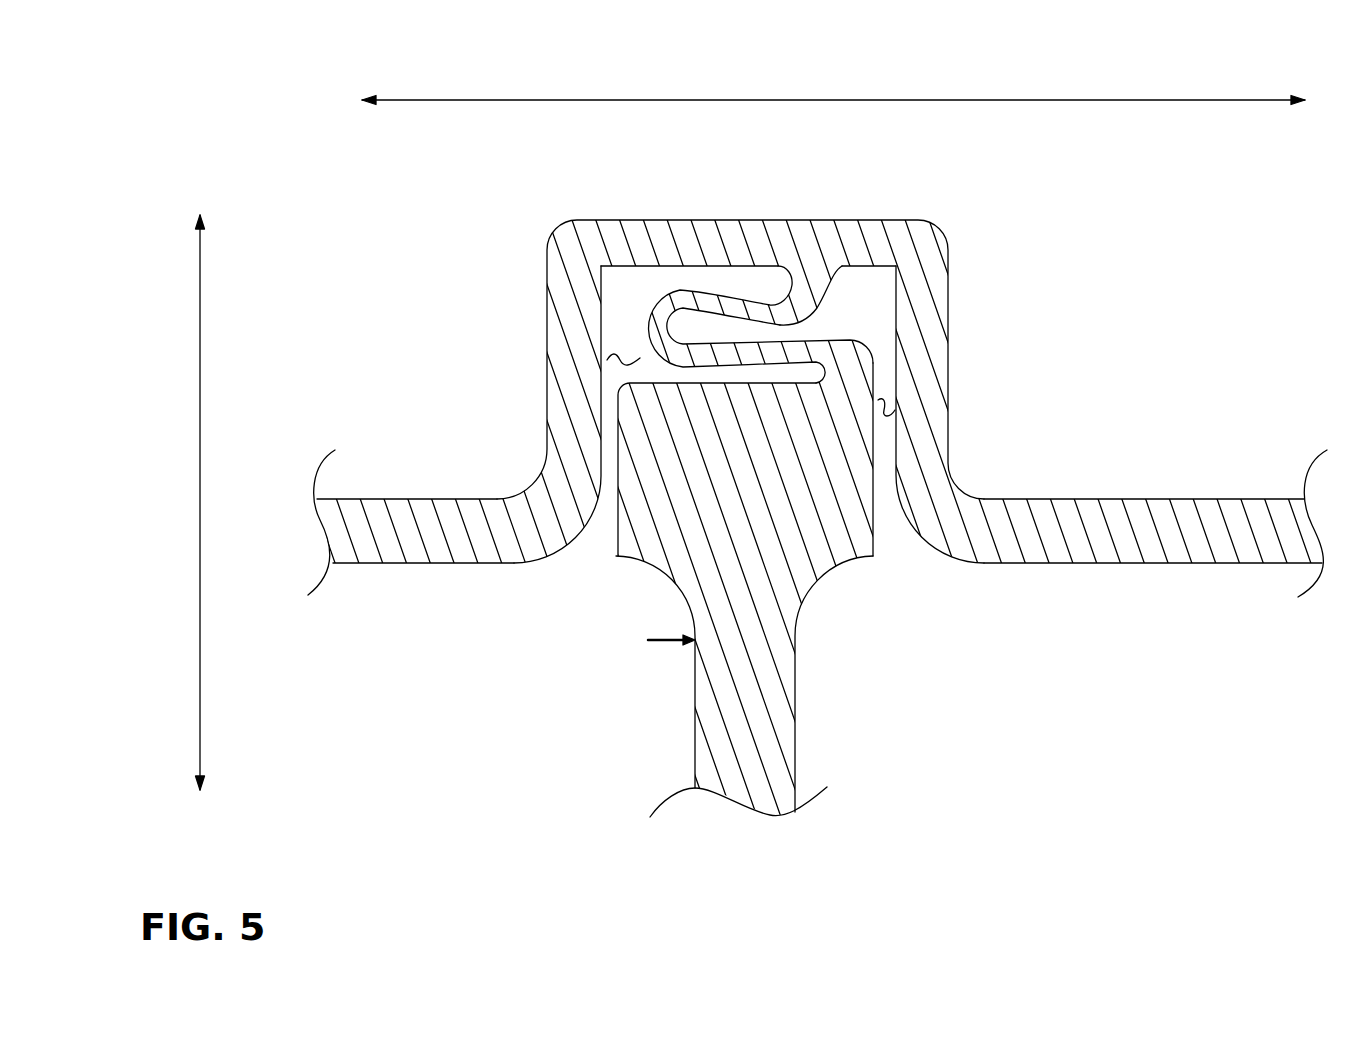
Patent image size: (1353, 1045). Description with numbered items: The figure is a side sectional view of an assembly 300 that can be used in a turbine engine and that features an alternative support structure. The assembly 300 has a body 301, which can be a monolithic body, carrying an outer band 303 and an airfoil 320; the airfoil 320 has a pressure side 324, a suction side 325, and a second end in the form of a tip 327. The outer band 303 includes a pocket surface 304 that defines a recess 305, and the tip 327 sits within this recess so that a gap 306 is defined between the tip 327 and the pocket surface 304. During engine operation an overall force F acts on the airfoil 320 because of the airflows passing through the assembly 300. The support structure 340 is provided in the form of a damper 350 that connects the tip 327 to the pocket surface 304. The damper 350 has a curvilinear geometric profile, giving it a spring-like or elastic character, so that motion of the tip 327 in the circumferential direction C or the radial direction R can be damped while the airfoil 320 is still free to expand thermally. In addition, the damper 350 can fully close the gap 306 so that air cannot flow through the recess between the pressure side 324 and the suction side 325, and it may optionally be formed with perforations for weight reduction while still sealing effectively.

The assembly 300 is at (1198, 274).
The body 301 is at (961, 272).
The outer band 303 is at (1162, 517).
The pocket surface 304 is at (713, 266).
The recess 305 is at (605, 489).
The gap 306 is at (622, 356).
The airfoil 320 is at (755, 834).
The pressure side 324 is at (694, 741).
The suction side 325 is at (797, 703).
The tip 327 is at (785, 528).
The support structure 340 is at (846, 286).
The damper 350 is at (652, 325).
The overall force F is at (658, 645).
The circumferential direction C is at (837, 98).
The radial direction R is at (203, 347).